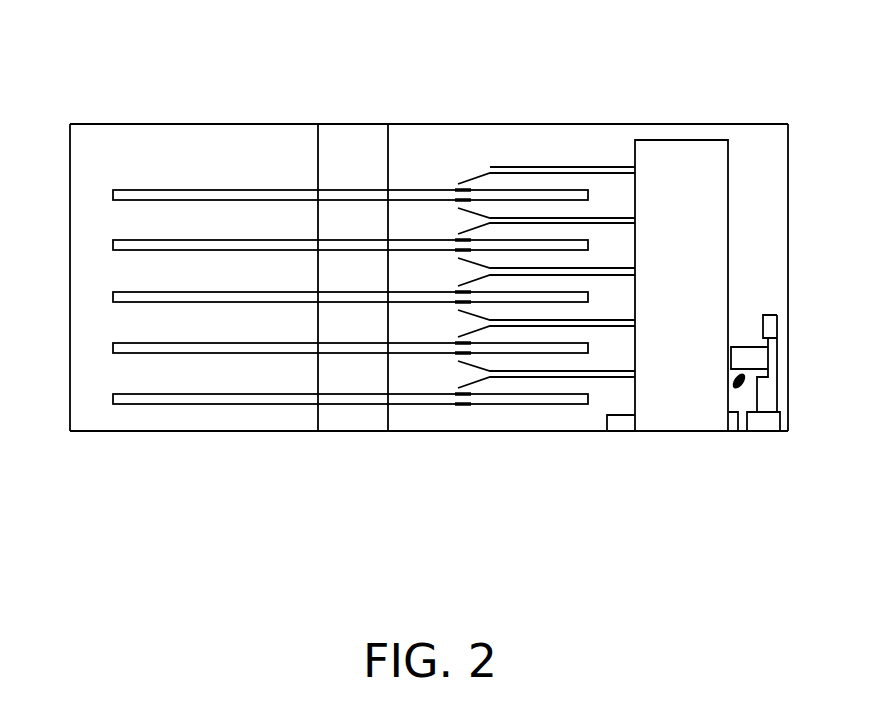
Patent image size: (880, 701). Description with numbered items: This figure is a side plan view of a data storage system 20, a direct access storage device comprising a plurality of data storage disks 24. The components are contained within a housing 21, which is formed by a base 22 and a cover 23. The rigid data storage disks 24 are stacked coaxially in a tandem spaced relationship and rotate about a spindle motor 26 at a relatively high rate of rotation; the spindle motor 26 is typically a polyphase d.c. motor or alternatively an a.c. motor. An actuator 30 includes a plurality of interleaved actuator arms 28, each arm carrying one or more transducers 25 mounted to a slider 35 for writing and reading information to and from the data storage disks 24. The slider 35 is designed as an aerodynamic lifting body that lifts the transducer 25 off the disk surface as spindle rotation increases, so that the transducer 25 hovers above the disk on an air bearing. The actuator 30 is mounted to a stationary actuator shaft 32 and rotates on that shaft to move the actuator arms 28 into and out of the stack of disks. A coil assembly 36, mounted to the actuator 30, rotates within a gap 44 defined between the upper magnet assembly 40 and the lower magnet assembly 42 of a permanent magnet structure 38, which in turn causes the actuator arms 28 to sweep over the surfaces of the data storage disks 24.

The data storage system 20 is at (692, 94).
The housing 21 is at (792, 167).
The base 22 is at (130, 432).
The cover 23 is at (143, 123).
The data storage disks 24 is at (113, 192).
The transducer 25 is at (458, 184).
The spindle motor 26 is at (345, 424).
The actuator arms 28 is at (545, 167).
The actuator 30 is at (680, 410).
The actuator shaft 32 is at (618, 426).
The slider 35 is at (460, 184).
The coil assembly 36 is at (738, 347).
The permanent magnet structure 38 is at (785, 403).
The upper magnet assembly 40 is at (772, 318).
The lower magnet assembly 42 is at (773, 382).
The gap 44 is at (735, 384).